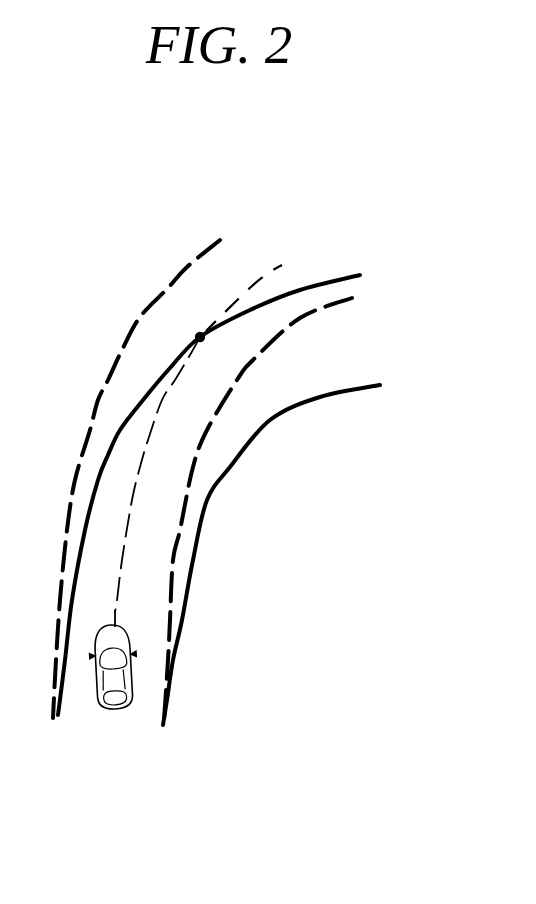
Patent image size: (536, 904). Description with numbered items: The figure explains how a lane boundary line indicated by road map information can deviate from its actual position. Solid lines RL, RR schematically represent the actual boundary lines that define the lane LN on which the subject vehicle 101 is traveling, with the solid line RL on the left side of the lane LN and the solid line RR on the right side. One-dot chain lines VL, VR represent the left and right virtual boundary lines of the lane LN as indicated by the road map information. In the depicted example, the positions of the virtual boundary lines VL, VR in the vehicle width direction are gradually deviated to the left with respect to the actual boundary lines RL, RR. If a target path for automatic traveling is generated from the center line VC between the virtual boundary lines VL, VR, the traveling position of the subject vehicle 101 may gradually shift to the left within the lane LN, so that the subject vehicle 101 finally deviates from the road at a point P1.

The left virtual boundary line VL is at (164, 291).
The right virtual boundary line VR is at (353, 300).
The center line VC is at (246, 289).
The left actual boundary line RL is at (299, 288).
The right actual boundary line RR is at (318, 402).
The point P1 is at (200, 332).
The subject vehicle 101 is at (103, 712).
The lane LN is at (137, 708).